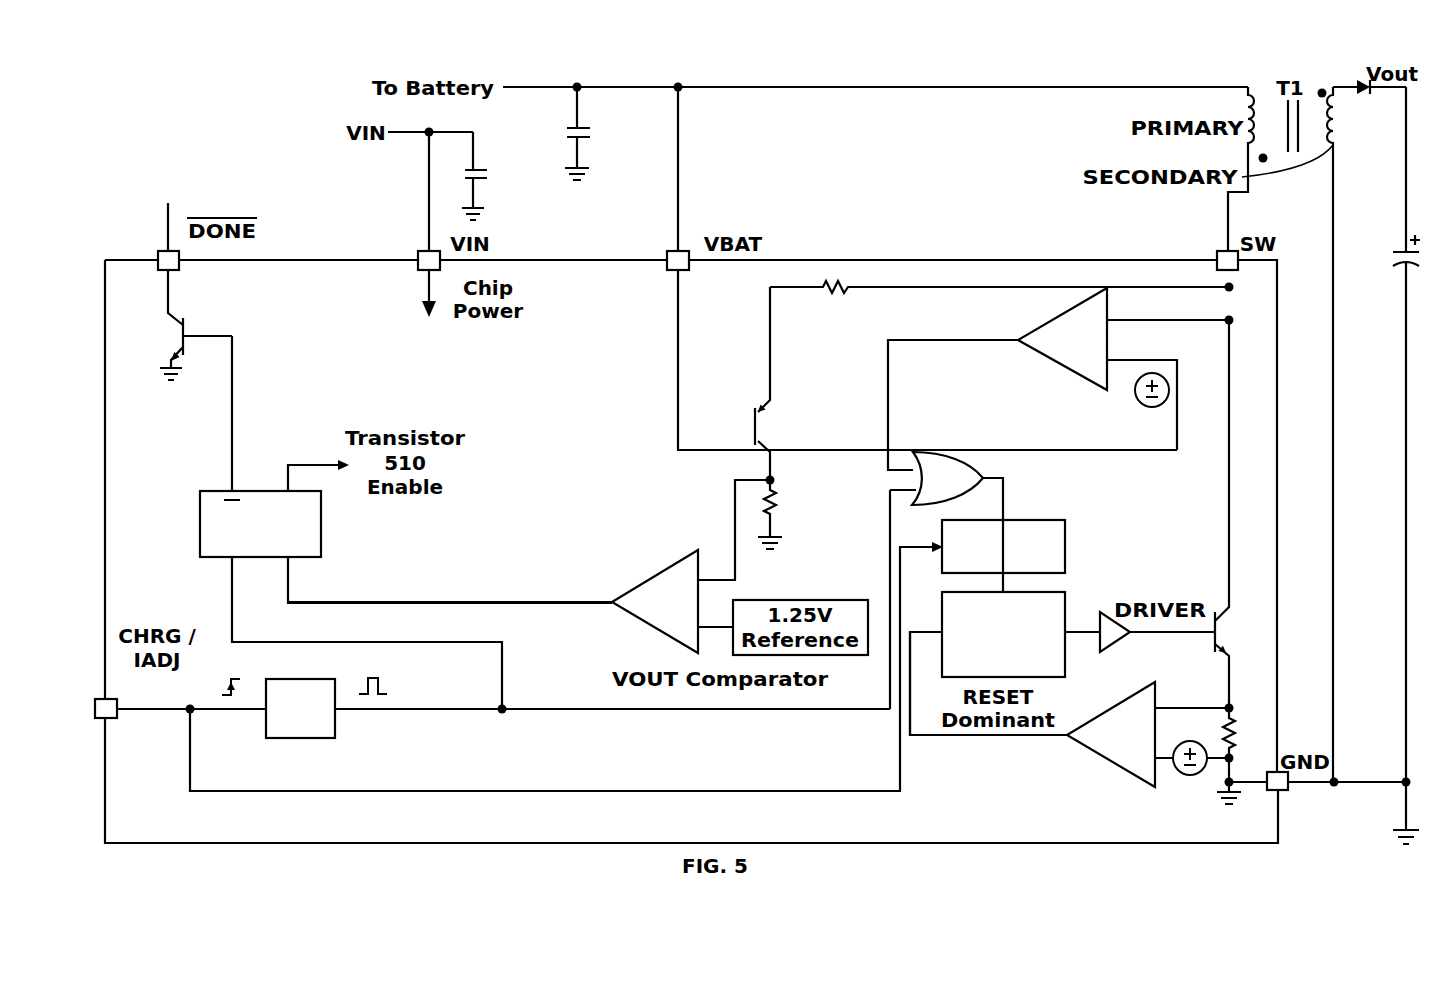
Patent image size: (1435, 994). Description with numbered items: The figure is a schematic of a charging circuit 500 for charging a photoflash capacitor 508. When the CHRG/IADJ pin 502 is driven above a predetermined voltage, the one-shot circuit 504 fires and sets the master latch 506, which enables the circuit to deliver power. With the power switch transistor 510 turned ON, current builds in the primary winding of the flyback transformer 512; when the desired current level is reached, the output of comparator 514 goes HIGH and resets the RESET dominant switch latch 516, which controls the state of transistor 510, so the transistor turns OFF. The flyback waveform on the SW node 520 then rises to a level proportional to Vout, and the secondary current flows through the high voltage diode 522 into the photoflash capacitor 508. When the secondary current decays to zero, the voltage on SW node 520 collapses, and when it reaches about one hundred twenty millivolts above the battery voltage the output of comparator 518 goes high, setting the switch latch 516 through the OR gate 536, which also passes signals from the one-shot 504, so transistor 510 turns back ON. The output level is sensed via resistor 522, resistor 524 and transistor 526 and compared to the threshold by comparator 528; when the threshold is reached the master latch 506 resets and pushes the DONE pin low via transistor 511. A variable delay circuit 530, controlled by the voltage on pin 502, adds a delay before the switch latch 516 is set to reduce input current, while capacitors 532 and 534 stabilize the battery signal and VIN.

The charging circuit 500 is at (1284, 864).
The CHRG/IADJ pin 502 is at (112, 699).
The one-shot circuit 504 is at (303, 738).
The master latch 506 is at (321, 530).
The photoflash capacitor 508 is at (1387, 257).
The power switch transistor 510 is at (1232, 627).
The transistor 511 is at (179, 325).
The transformer 512 is at (1280, 117).
The comparator 514 is at (1100, 760).
The switch latch 516 is at (1068, 603).
The comparator 518 is at (1070, 375).
The SW node 520 is at (1217, 252).
The high voltage diode 522 is at (838, 285).
The resistor 524 is at (780, 495).
The transistor 526 is at (765, 413).
The comparator 528 is at (655, 575).
The variable delay circuit 530 is at (1068, 540).
The capacitor 532 is at (590, 135).
The capacitor 534 is at (487, 176).
The OR gate 536 is at (945, 450).